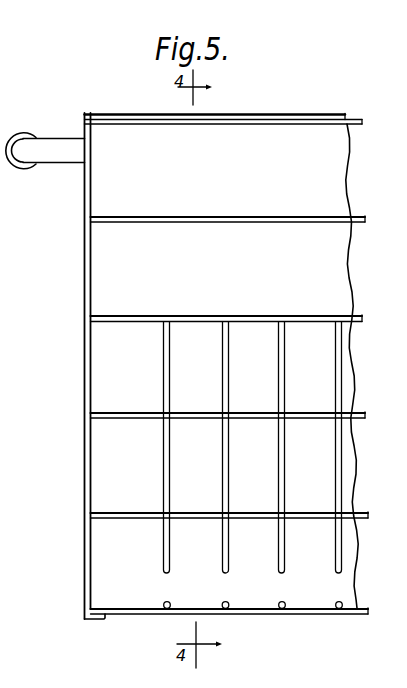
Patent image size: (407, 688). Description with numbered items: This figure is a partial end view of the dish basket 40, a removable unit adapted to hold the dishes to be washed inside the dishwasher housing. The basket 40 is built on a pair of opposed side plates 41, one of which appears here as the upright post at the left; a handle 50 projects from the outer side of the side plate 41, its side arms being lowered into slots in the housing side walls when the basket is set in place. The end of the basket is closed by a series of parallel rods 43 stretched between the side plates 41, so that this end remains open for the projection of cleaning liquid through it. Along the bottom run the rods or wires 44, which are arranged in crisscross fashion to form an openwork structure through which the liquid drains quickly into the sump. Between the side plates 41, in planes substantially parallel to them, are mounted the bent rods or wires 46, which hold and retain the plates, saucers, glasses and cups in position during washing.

The basket 40 is at (140, 109).
The side plate 41 is at (92, 270).
The parallel rods 43 is at (185, 215).
The bottom rods or wires 44 is at (164, 604).
The bent rods or wires 46 is at (213, 343).
The handle 50 is at (22, 132).